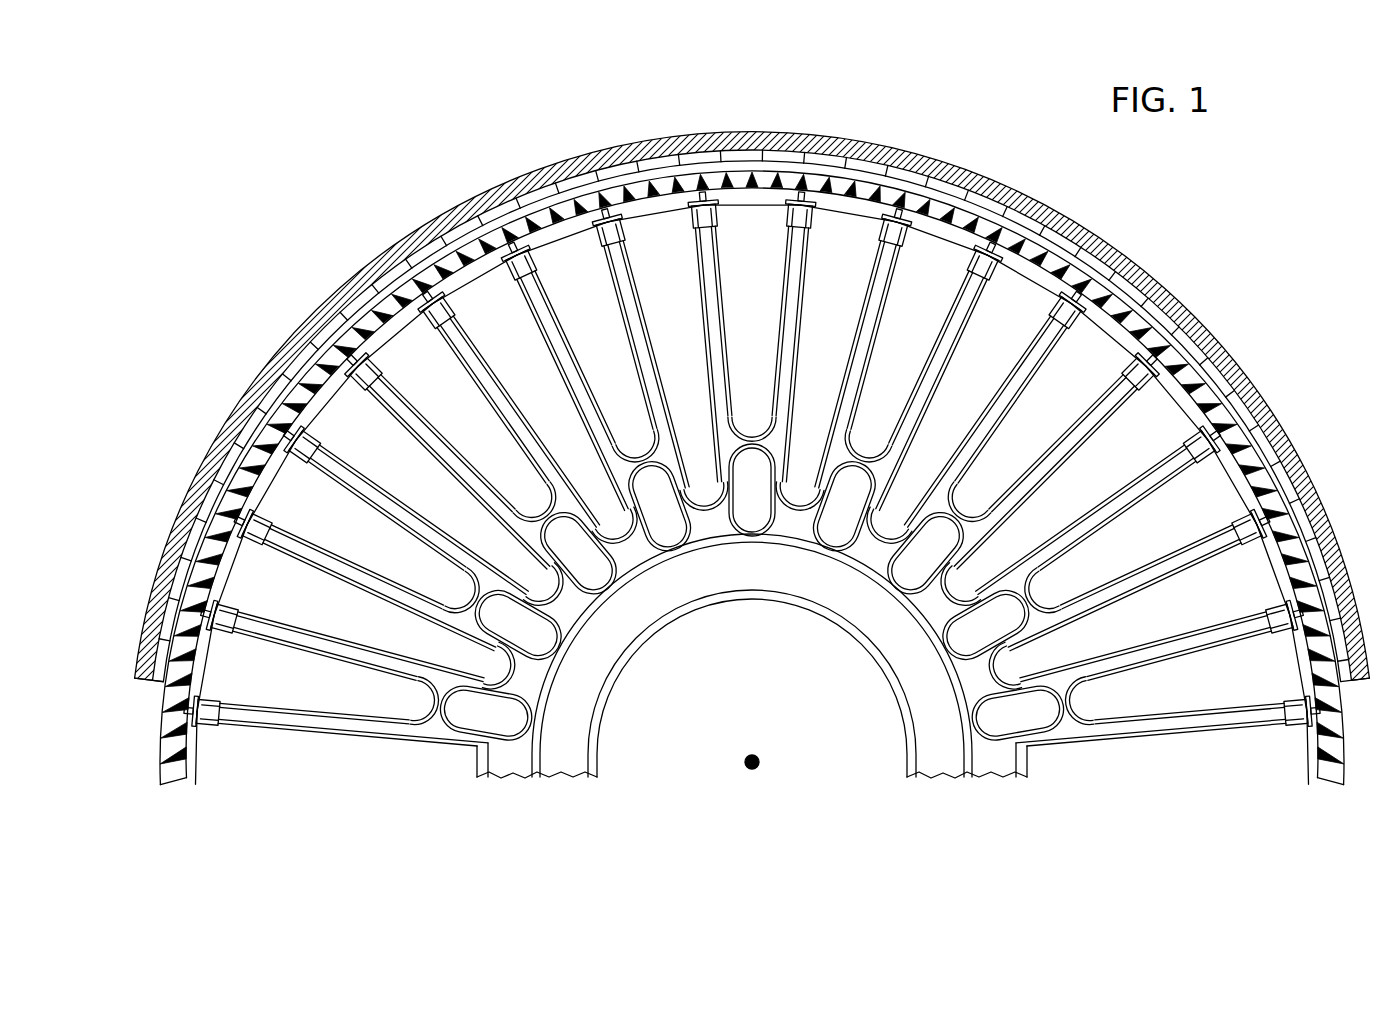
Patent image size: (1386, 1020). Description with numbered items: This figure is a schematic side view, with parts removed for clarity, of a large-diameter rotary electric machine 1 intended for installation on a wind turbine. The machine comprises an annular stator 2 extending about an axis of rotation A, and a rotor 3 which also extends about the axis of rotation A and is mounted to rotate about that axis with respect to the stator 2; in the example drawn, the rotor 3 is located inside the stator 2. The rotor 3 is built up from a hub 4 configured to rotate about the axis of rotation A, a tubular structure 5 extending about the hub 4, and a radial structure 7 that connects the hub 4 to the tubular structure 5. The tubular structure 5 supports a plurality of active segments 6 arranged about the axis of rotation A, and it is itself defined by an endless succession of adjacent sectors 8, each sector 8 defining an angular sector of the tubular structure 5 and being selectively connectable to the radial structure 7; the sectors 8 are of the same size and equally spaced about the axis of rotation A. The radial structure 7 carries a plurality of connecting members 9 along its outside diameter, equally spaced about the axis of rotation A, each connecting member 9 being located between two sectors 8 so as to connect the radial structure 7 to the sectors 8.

The rotary electric machine 1 is at (405, 142).
The annular stator 2 is at (1198, 300).
The rotor 3 is at (287, 495).
The hub 4 is at (636, 619).
The tubular structure 5 is at (1313, 788).
The active segments 6 is at (1276, 503).
The radial structure 7 is at (321, 748).
The sectors 8 is at (208, 767).
The connecting members 9 is at (216, 722).
The axis of rotation A is at (760, 758).